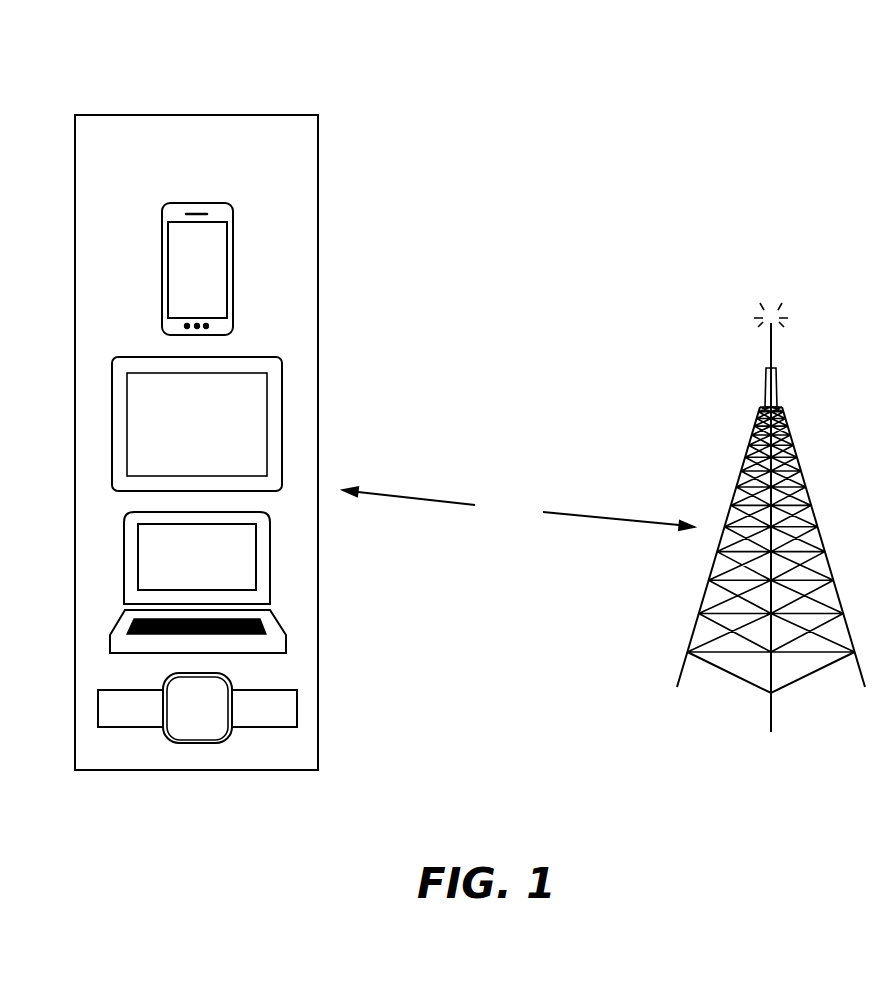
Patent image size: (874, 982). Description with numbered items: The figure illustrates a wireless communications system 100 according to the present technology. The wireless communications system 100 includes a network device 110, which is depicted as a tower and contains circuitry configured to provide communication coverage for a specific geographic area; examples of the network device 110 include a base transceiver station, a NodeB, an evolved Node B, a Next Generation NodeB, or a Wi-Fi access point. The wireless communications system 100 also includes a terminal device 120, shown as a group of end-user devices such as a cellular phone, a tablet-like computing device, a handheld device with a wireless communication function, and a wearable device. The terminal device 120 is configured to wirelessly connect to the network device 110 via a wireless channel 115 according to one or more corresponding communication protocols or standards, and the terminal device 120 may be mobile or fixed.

The wireless communications system 100 is at (752, 66).
The network device 110 is at (769, 503).
The wireless channel 115 is at (558, 508).
The terminal device 120 is at (272, 183).